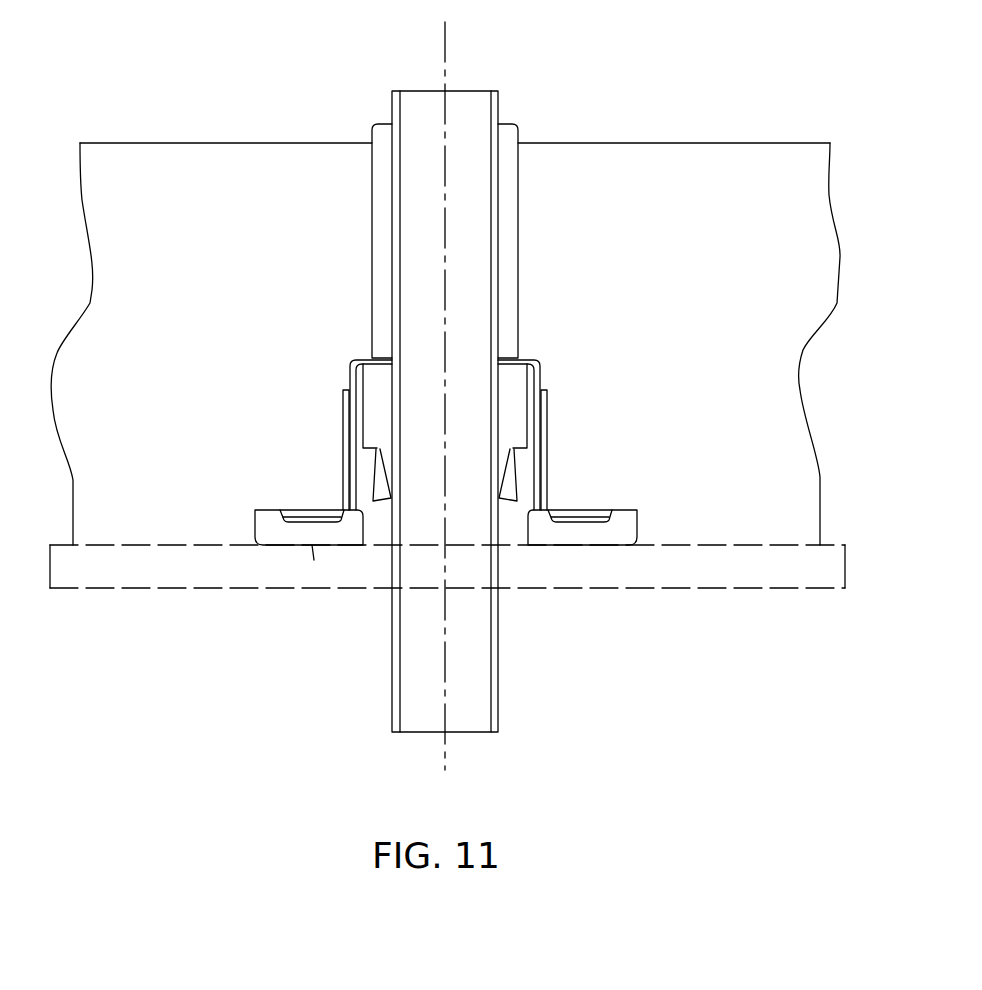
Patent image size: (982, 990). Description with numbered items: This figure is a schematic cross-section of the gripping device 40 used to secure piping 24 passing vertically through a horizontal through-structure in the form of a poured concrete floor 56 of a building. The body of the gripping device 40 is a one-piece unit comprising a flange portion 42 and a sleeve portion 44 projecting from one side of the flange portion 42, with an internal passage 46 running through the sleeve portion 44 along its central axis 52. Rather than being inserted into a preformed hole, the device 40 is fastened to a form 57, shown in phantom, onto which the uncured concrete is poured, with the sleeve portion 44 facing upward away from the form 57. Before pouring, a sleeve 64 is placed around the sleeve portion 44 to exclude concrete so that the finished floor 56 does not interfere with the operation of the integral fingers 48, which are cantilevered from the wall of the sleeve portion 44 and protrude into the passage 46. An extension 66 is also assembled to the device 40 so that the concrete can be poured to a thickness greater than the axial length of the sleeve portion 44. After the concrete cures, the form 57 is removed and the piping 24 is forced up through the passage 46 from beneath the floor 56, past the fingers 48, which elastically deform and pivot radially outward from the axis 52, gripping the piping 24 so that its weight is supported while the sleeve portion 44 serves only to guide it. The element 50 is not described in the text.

The central axis 52 is at (446, 62).
The concrete floor 56 is at (207, 165).
The form 57 is at (157, 573).
The gripping device 40 is at (597, 546).
The piping 24 is at (495, 680).
The extension 66 is at (510, 247).
The internal passage 46 is at (392, 379).
The sleeve 64 is at (345, 412).
The sleeve portion 44 is at (535, 408).
The fingers 48 is at (382, 472).
The flange portion 42 is at (625, 527).
The bracket bottom 50 is at (314, 560).